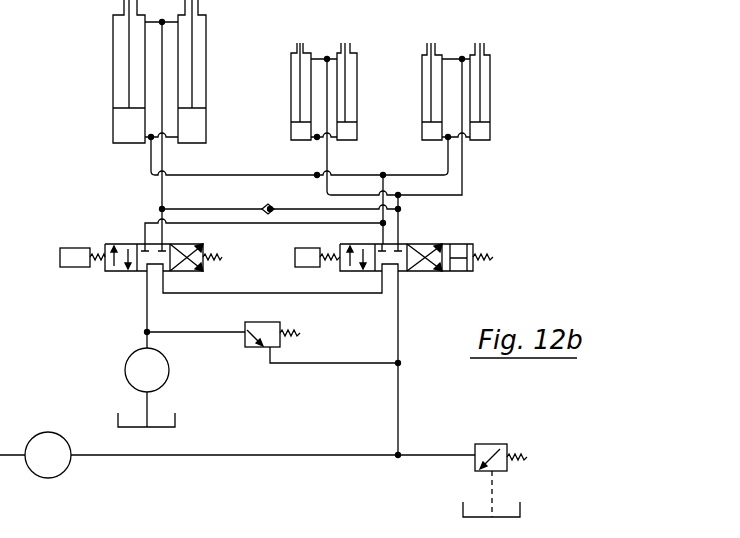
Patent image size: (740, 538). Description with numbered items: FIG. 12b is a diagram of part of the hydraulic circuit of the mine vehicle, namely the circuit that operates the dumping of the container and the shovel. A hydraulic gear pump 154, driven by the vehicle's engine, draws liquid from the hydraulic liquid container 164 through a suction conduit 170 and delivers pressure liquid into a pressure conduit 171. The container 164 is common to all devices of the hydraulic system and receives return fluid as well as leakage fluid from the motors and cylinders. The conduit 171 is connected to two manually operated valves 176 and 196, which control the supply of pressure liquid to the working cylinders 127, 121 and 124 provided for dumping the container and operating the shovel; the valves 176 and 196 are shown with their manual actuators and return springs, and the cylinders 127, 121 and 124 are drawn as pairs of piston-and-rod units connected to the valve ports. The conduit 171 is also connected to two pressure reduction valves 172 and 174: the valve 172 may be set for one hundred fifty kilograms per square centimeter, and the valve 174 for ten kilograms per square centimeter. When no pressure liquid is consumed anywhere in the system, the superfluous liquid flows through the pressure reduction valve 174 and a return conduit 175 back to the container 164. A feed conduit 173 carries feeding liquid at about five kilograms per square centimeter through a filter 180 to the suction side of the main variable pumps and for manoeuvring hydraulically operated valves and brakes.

The cylinder 127 is at (112, 76).
The cylinder 121 is at (290, 110).
The cylinder 124 is at (422, 68).
The manually operated valve 176 is at (140, 244).
The manually operated valve 196 is at (405, 244).
The conduit 171 is at (143, 339).
The hydraulic pump 154 is at (124, 370).
The hydraulic liquid container 164 is at (140, 425).
The conduit 170 is at (148, 410).
The pressure reduction valve 172 is at (245, 333).
The feed conduit 173 is at (280, 457).
The pressure reduction valve 174 is at (490, 445).
The return conduit 175 is at (490, 495).
The filter 180 is at (67, 472).